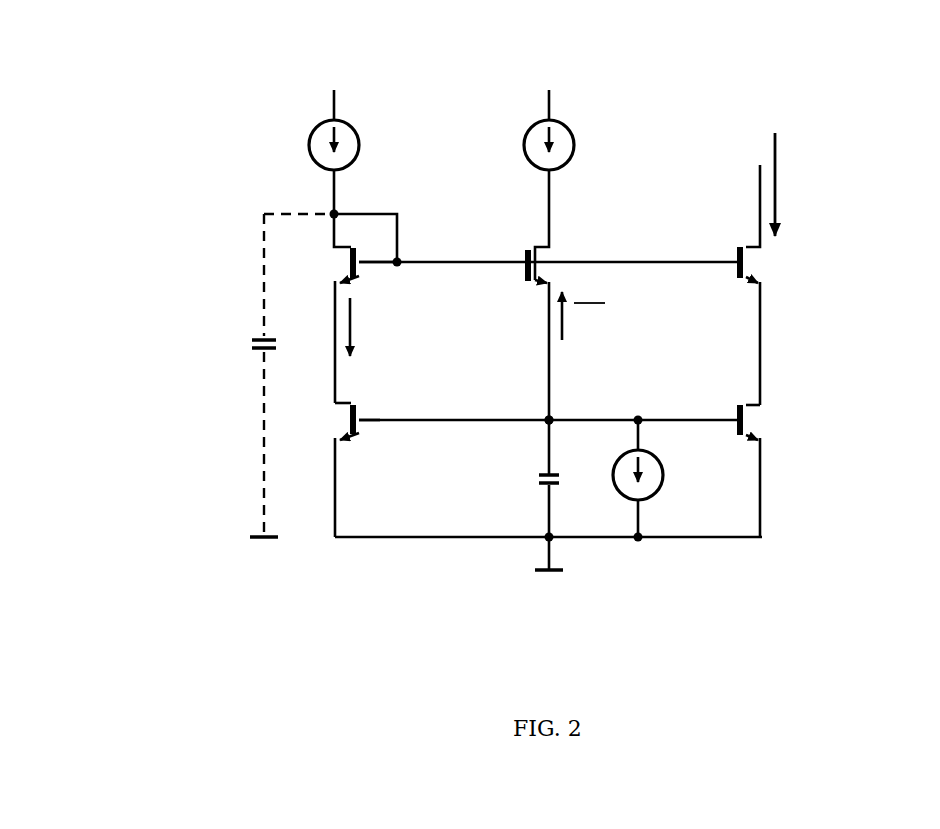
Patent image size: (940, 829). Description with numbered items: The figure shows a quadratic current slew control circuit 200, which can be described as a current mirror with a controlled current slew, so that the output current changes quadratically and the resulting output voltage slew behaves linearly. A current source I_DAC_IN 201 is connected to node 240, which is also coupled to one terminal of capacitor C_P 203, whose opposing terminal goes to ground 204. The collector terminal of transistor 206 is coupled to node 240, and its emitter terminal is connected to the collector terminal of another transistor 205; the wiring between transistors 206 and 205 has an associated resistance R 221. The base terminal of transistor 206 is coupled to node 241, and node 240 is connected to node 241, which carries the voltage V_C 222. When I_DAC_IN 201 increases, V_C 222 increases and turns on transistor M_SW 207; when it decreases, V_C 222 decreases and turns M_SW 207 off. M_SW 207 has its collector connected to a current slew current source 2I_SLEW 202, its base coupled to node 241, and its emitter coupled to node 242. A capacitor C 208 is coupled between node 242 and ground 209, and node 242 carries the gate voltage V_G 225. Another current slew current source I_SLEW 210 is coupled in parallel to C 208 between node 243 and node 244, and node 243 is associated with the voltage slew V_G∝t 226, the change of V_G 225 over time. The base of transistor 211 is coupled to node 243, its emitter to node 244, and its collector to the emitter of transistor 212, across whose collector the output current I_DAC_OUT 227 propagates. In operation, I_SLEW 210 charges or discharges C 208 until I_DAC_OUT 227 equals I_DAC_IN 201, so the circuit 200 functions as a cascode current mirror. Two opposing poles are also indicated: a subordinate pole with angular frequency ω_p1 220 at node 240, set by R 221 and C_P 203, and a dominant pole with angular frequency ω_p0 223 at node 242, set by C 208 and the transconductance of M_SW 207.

The quadratic current slew control circuit 200 is at (145, 97).
The current source I_DAC_IN 201 is at (312, 127).
The current slew current source 2I_SLEW 202 is at (532, 125).
The capacitor C_P 203 is at (255, 335).
The ground 204 is at (250, 533).
The transistor 205 is at (358, 436).
The transistor 206 is at (360, 280).
The transistor M_SW 207 is at (543, 281).
The capacitor C 208 is at (540, 487).
The ground 209 is at (565, 572).
The current slew current source I_SLEW 210 is at (622, 497).
The transistor 211 is at (770, 400).
The transistor 212 is at (738, 247).
The angular frequency ω_p1 220 is at (293, 227).
The resistance R 221 is at (383, 343).
The voltage V_C 222 is at (430, 226).
The angular frequency ω_p0 223 is at (498, 400).
The gate voltage V_G 225 is at (590, 378).
The voltage slew V_G∝t 226 is at (683, 372).
The output current I_DAC_OUT 227 is at (835, 172).
The node 240 is at (326, 210).
The node 241 is at (400, 268).
The node 242 is at (540, 425).
The node 243 is at (655, 428).
The node 244 is at (652, 545).